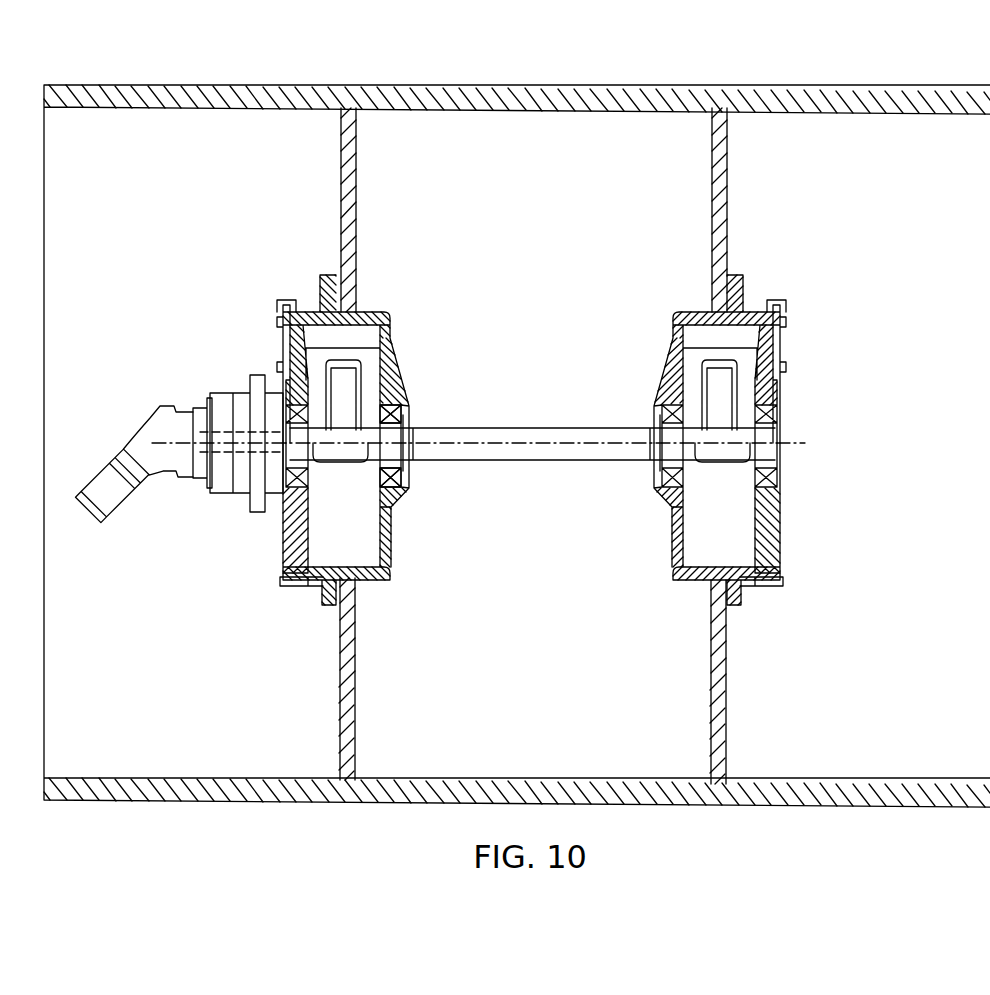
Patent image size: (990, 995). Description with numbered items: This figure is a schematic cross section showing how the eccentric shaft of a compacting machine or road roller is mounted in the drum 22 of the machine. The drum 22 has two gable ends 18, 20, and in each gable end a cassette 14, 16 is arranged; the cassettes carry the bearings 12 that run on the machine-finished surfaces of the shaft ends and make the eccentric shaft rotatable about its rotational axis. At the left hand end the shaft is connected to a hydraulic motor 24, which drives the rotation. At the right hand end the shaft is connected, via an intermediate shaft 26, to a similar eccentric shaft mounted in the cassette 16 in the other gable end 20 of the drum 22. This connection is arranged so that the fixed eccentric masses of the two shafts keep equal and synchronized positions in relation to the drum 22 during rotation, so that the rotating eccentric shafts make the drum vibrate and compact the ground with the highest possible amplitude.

The bearings 12 is at (384, 478).
The cassette 14 is at (383, 571).
The cassette 16 is at (687, 570).
The gable end 18 is at (356, 189).
The gable end 20 is at (727, 191).
The drum 22 is at (859, 89).
The hydraulic motor 24 is at (213, 492).
The intermediate shaft 26 is at (552, 462).